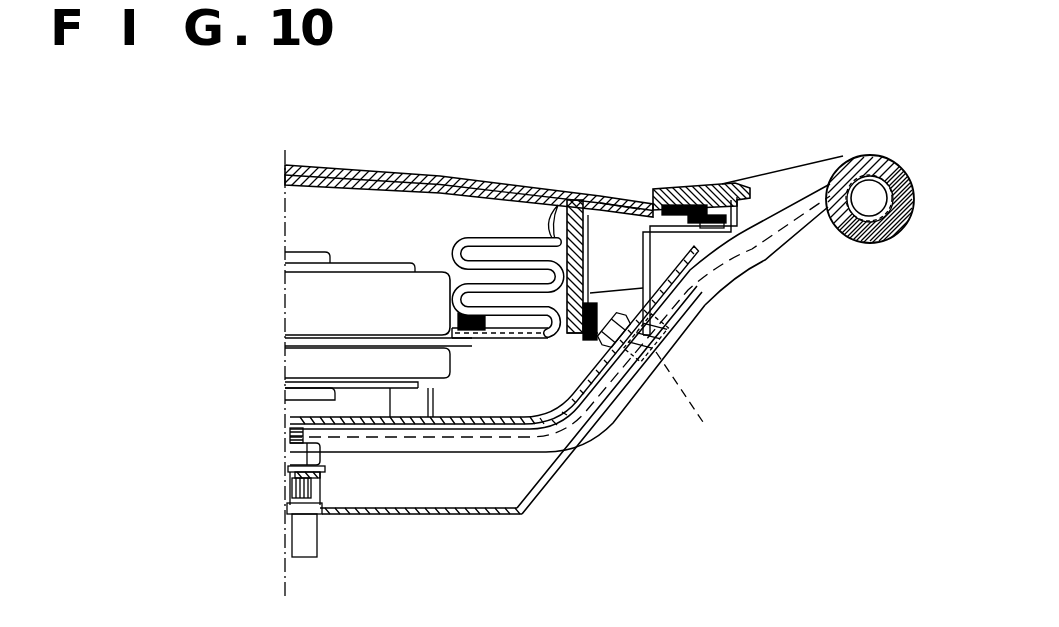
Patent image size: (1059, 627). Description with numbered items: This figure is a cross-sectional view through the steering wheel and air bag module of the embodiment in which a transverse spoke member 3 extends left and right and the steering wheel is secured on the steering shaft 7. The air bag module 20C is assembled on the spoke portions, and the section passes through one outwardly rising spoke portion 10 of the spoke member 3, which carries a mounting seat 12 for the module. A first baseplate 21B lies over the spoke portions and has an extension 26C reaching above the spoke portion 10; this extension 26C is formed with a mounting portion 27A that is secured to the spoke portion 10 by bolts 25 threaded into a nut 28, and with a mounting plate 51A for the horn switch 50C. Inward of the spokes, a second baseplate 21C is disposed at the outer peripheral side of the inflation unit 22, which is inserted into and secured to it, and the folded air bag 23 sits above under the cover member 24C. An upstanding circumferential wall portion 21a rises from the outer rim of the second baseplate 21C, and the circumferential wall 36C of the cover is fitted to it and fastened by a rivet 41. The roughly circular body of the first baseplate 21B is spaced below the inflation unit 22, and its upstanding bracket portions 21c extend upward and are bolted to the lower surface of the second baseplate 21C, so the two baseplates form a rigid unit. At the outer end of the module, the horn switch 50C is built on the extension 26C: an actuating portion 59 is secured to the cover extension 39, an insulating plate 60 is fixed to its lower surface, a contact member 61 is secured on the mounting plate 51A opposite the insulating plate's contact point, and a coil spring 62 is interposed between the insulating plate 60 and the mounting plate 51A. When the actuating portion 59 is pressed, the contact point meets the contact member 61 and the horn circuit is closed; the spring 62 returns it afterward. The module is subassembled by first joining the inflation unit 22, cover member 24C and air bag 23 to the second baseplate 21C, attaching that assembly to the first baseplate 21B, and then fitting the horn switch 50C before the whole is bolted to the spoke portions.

The cover member 24C is at (384, 170).
The circumferential wall 36C is at (548, 193).
The extension 39 is at (620, 200).
The coil spring 62 is at (660, 195).
The contact member 61 is at (678, 192).
The insulating plate 60 is at (687, 186).
The horn switch 50C is at (722, 173).
The actuating portion 59 is at (735, 182).
The mounting plate 51A is at (762, 250).
The spoke portion 10 is at (686, 306).
The mounting portion 27A is at (670, 332).
The mounting seat 12 is at (606, 391).
The extension 26C is at (603, 408).
The first baseplate 21B is at (483, 426).
The upstanding circumferential wall portion 21a is at (558, 338).
The air bag module 20C is at (545, 488).
The upstanding bracket portion 21c is at (408, 407).
The bolt 25 is at (685, 385).
The nut 28 is at (628, 308).
The inflation unit 22 is at (378, 263).
The air bag 23 is at (473, 238).
The second baseplate 21C is at (513, 332).
The rivet 41 is at (487, 350).
The spoke member 3 is at (355, 452).
The steering shaft 7 is at (317, 546).